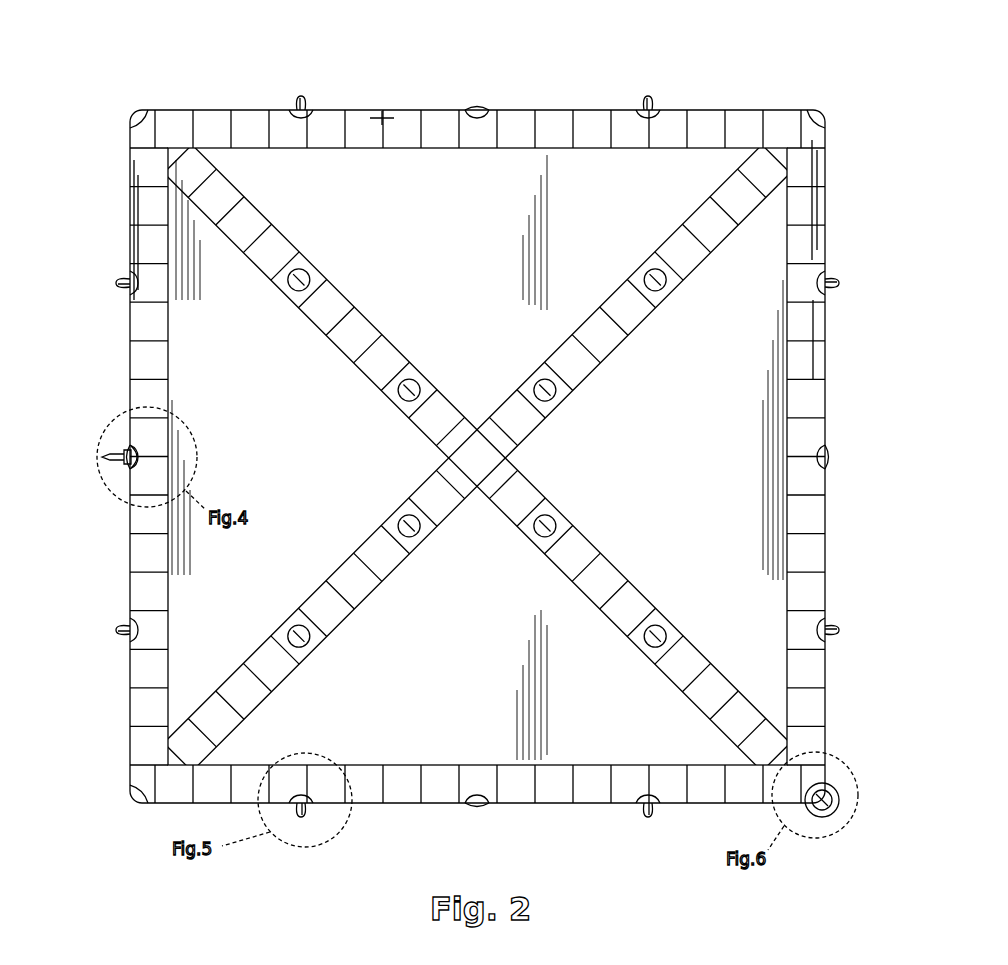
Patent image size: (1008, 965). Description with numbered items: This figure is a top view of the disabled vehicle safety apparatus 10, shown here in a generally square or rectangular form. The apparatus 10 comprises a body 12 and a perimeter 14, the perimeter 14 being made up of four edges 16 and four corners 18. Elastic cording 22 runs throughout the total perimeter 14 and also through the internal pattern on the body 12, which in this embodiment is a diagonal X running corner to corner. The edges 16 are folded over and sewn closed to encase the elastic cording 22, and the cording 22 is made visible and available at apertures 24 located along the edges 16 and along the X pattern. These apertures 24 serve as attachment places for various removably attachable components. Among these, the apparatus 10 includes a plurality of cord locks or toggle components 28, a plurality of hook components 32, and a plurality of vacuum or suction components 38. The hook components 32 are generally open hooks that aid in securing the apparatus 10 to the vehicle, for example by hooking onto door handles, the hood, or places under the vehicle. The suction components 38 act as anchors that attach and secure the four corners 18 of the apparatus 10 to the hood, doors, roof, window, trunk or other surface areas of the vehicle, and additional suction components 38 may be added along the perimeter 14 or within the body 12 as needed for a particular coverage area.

The disabled vehicle safety apparatus 10 is at (645, 46).
The body 12 is at (446, 250).
The perimeter 14 is at (812, 540).
The edges 16 is at (390, 104).
The corners 18 is at (127, 106).
The elastic cording 22 is at (482, 104).
The apertures 24 is at (412, 376).
The cord lock or toggle component 28 is at (122, 472).
The hook component 32 is at (307, 100).
The suction component 38 is at (829, 815).